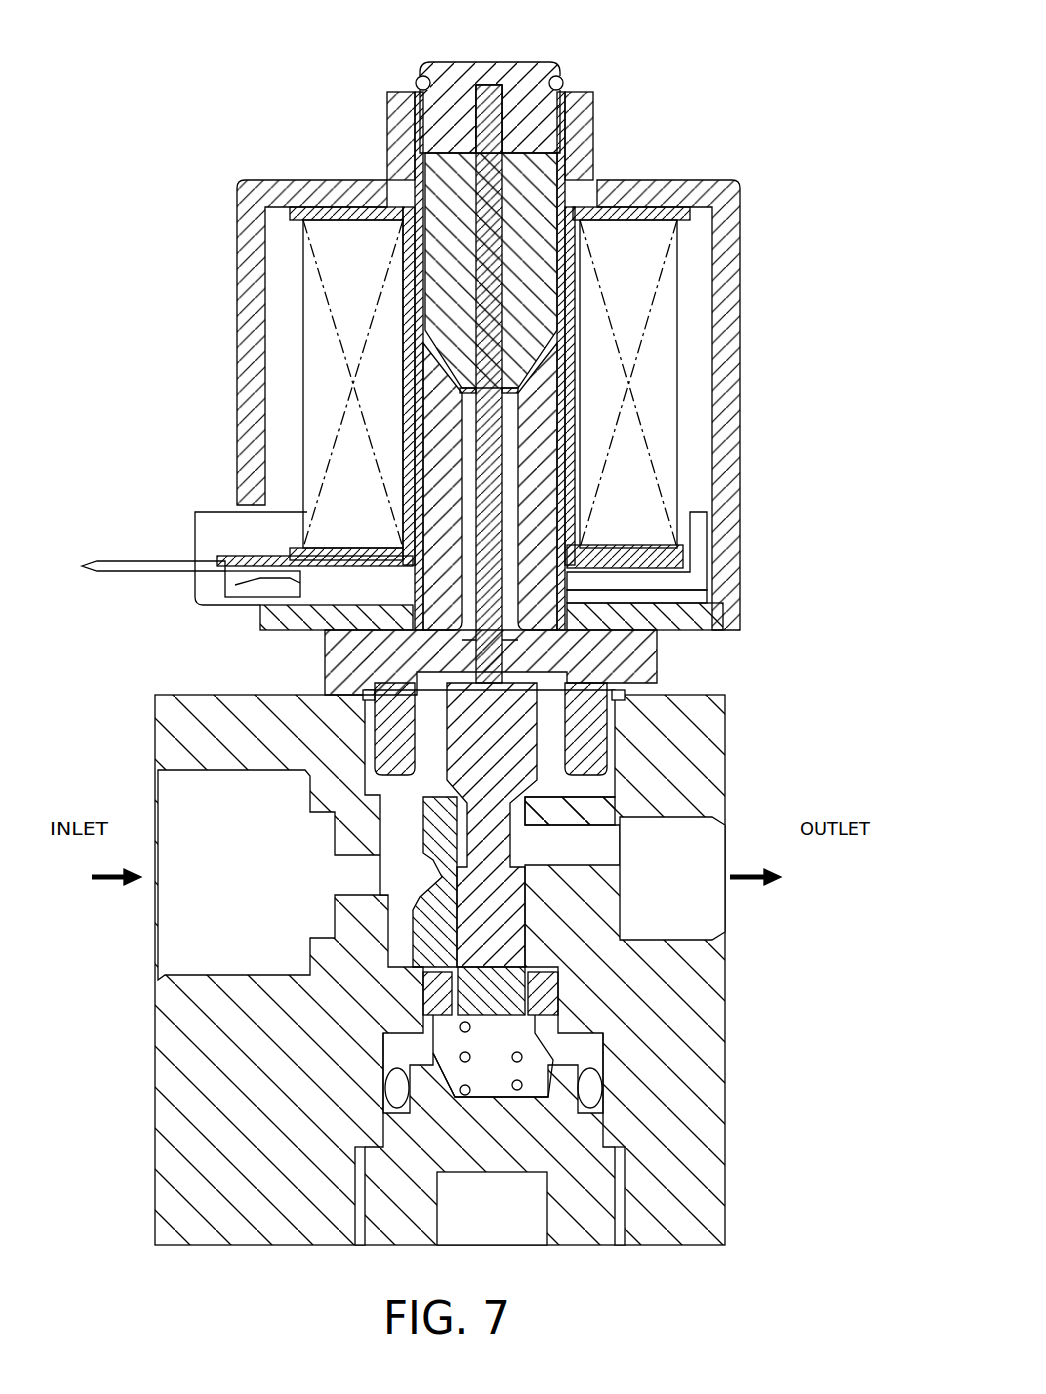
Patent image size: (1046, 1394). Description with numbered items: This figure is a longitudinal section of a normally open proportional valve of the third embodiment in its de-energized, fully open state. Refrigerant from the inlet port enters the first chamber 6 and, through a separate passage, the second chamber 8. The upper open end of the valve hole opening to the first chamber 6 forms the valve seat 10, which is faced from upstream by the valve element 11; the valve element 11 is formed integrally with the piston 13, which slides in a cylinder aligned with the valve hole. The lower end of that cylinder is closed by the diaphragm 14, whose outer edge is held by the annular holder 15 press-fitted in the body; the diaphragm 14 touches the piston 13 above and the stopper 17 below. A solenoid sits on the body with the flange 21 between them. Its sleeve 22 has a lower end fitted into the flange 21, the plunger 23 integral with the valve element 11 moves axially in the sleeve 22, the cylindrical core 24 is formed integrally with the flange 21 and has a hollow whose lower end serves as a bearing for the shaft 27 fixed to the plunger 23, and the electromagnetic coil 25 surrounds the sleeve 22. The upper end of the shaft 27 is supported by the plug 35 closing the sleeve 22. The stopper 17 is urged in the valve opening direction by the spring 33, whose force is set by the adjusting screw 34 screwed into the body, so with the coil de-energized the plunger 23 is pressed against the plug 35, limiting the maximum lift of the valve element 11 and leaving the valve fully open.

The first chamber 6 is at (372, 690).
The second chamber 8 is at (445, 1120).
The valve seat 10 is at (455, 805).
The valve element 11 is at (465, 971).
The piston 13 is at (520, 897).
The diaphragm 14 is at (555, 962).
The annular holder 15 is at (505, 1025).
The stopper 17 is at (540, 1050).
The flange 21 is at (657, 655).
The sleeve 22 is at (552, 130).
The plunger 23 is at (540, 175).
The cylindrical core 24 is at (540, 500).
The electromagnetic coil 25 is at (665, 368).
The shaft 27 is at (505, 440).
The spring 33 is at (515, 1068).
The adjusting screw 34 is at (458, 1175).
The plug 35 is at (456, 62).